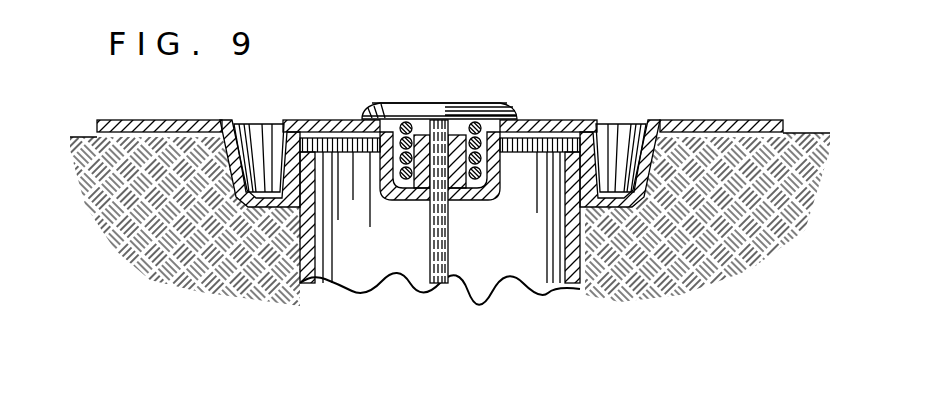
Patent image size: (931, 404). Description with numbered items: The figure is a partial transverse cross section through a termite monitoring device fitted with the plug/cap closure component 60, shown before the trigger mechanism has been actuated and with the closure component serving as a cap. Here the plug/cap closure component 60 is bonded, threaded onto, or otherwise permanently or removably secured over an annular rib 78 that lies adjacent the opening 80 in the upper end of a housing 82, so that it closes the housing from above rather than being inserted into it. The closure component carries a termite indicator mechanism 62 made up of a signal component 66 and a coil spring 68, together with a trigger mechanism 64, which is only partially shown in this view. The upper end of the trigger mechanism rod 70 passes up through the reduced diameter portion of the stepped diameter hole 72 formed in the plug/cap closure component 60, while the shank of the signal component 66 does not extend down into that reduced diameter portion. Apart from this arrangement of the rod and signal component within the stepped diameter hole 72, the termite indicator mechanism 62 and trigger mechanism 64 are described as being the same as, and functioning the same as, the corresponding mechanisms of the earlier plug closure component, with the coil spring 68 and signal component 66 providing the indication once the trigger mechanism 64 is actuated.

The plug/cap closure component 60 is at (527, 75).
The termite indicator mechanism 62 is at (440, 98).
The trigger mechanism 64 is at (427, 240).
The signal component 66 is at (391, 70).
The coil spring 68 is at (480, 195).
The trigger mechanism rod 70 is at (452, 252).
The stepped diameter hole 72 is at (390, 150).
The annular rib 78 is at (557, 178).
The opening 80 is at (529, 162).
The housing 82 is at (194, 119).